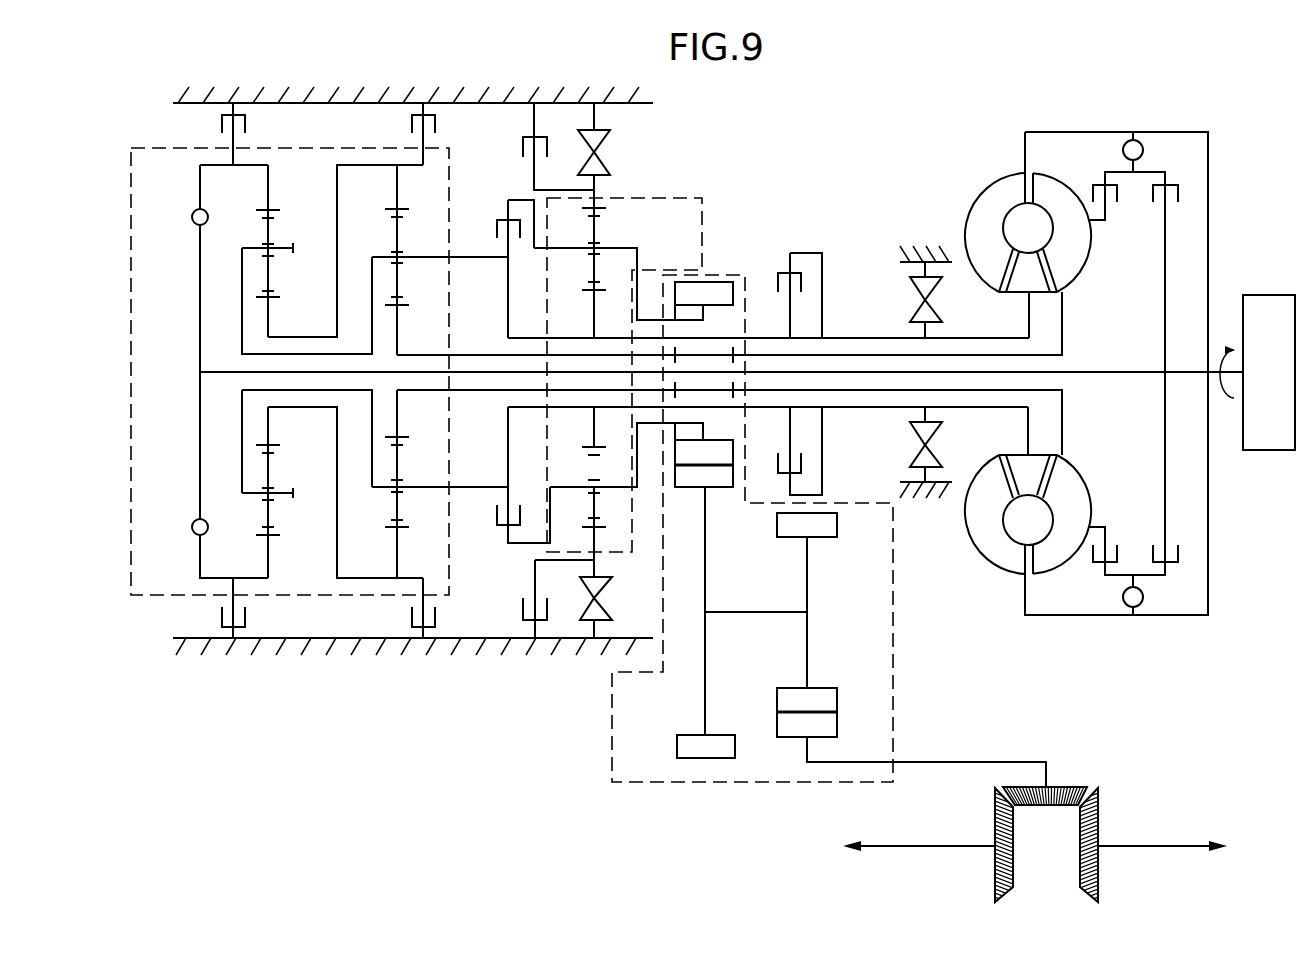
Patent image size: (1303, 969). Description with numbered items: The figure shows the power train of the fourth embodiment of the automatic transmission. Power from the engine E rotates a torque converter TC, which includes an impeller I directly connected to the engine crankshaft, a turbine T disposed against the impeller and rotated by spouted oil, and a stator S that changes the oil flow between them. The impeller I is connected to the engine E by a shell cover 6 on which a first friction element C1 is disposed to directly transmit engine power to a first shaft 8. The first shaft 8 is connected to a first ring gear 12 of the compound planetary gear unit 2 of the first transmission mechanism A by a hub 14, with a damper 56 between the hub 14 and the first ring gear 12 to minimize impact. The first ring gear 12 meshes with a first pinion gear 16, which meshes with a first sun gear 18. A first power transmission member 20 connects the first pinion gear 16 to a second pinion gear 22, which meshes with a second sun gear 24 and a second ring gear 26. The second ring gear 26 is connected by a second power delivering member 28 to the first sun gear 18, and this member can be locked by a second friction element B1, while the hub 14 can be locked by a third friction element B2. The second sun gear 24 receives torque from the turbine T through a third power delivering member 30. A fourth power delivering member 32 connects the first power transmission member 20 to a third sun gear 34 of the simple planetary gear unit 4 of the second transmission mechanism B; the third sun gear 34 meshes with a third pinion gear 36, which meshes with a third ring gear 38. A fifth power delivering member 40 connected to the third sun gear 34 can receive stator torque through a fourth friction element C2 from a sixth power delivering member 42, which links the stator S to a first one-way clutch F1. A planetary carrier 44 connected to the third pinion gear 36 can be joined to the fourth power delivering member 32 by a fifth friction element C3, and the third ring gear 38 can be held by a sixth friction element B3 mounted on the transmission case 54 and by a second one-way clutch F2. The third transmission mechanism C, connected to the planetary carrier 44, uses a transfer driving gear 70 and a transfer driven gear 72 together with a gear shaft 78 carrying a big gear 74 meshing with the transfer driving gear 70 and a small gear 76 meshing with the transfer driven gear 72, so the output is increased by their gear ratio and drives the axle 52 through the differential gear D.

The compound planetary gear unit 2 is at (150, 147).
The simple planetary gear unit 4 is at (703, 208).
The shell cover 6 is at (1113, 132).
The first shaft 8 is at (1121, 372).
The first ring gear 12 is at (262, 208).
The hub 14 is at (200, 295).
The first pinion gear 16 is at (272, 287).
The first sun gear 18 is at (276, 298).
The first power transmission member 20 is at (262, 354).
The second pinion gear 22 is at (399, 220).
The second sun gear 24 is at (403, 305).
The second ring gear 26 is at (397, 209).
The second power delivering member 28 is at (337, 190).
The third power delivering member 30 is at (1053, 357).
The fourth power delivering member 32 is at (478, 258).
The third sun gear 34 is at (603, 290).
The third pinion gear 36 is at (587, 290).
The third ring gear 38 is at (600, 209).
The fifth power delivering member 40 is at (770, 338).
The sixth power delivering member 42 is at (847, 338).
The planetary carrier 44 is at (637, 268).
The axle 52 is at (1148, 846).
The transmission case 54 is at (425, 100).
The damper 56 is at (192, 217).
The transfer driving gear 70 is at (716, 283).
The transfer driven gear 72 is at (833, 727).
The big gear 74 is at (679, 748).
The small gear 76 is at (833, 700).
The gear shaft 78 is at (698, 683).
The first transmission mechanism A is at (457, 170).
The second transmission mechanism B is at (622, 197).
The third transmission mechanism C is at (691, 804).
The differential gear D is at (981, 808).
The engine E is at (1257, 372).
The torque converter TC is at (1041, 121).
The impeller I is at (984, 211).
The turbine T is at (1073, 260).
The stator S is at (1020, 283).
The second friction element B1 is at (439, 370).
The third friction element B2 is at (251, 370).
The sixth friction element B3 is at (558, 370).
The first friction element C1 is at (1144, 365).
The fourth friction element C2 is at (779, 359).
The fifth friction element C3 is at (509, 371).
The first one-way clutch F1 is at (934, 372).
The second one-way clutch F2 is at (606, 370).